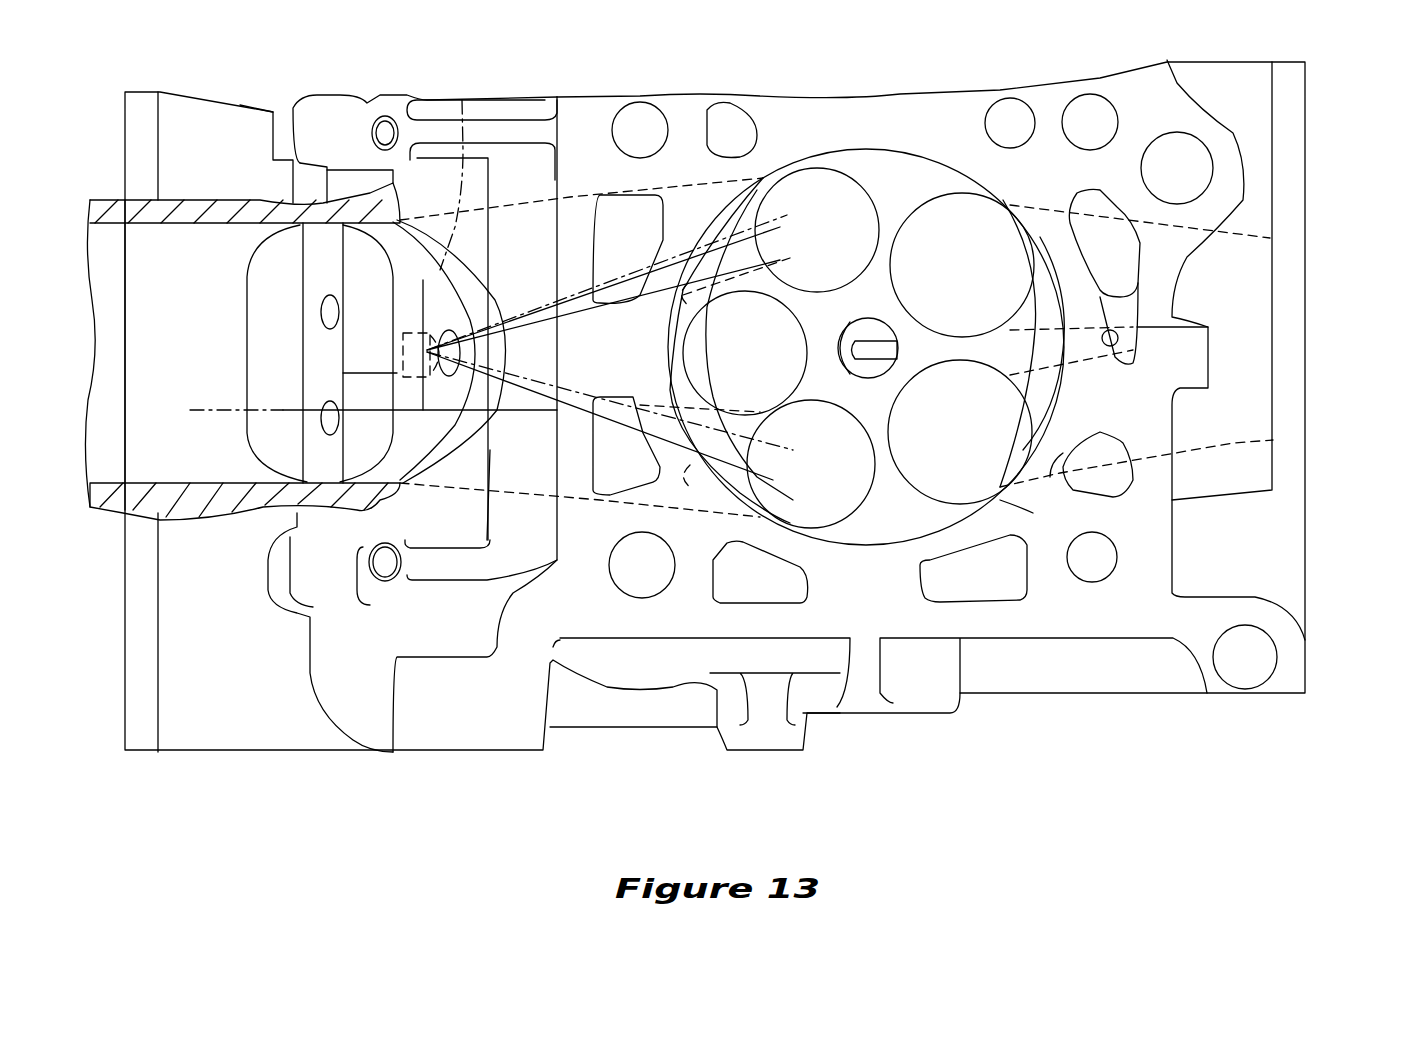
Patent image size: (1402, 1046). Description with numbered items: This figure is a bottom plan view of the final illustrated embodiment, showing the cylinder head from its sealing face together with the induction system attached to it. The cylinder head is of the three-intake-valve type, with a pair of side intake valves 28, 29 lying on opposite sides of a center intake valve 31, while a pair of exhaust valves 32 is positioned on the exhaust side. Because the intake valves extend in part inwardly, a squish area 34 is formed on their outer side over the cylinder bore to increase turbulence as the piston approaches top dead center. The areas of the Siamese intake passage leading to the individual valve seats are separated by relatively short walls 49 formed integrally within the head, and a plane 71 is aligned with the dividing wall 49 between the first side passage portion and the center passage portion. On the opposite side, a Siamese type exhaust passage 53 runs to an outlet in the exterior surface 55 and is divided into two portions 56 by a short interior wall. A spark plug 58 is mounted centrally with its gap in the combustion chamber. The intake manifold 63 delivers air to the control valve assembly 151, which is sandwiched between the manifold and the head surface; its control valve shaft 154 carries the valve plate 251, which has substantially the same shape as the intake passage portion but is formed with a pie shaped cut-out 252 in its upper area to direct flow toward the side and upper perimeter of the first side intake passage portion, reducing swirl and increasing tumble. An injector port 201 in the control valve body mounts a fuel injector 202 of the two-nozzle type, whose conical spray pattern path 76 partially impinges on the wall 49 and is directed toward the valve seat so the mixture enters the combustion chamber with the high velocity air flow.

The side intake valve 28 is at (822, 510).
The side intake valve 29 is at (818, 182).
The center intake valve 31 is at (783, 323).
The exhaust valve 32 is at (955, 207).
The squish area 34 is at (668, 318).
The wall 49 is at (670, 390).
The exhaust passage 53 is at (1240, 440).
The exterior surface 55 is at (1307, 547).
The exhaust passage portion 56 is at (1085, 215).
The spark plug 58 is at (873, 330).
The intake manifold 63 is at (106, 538).
The plane 71 is at (217, 410).
The conical spray pattern path 76 is at (818, 425).
The control valve assembly 151 is at (252, 172).
The control valve shaft 154 is at (320, 248).
The injector port 201 is at (440, 330).
The fuel injector 202 is at (460, 100).
The valve plate 251 is at (247, 317).
The pie shaped cut-out 252 is at (353, 380).